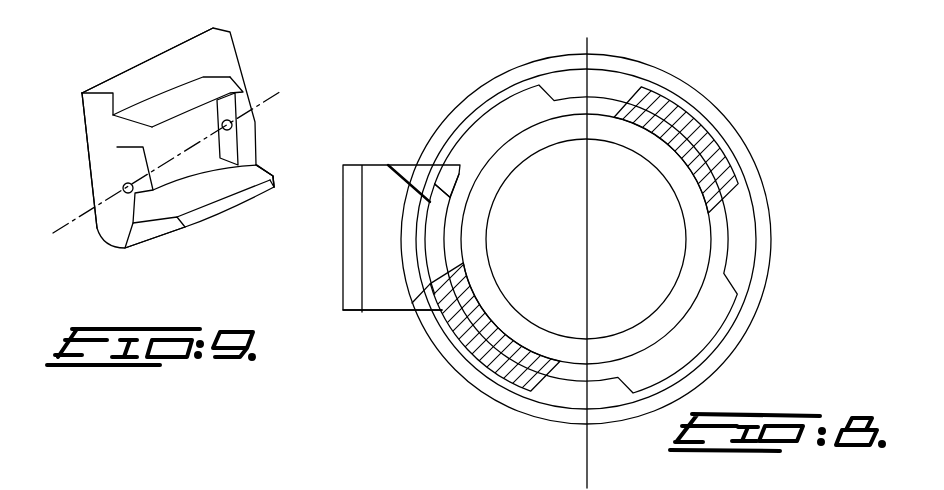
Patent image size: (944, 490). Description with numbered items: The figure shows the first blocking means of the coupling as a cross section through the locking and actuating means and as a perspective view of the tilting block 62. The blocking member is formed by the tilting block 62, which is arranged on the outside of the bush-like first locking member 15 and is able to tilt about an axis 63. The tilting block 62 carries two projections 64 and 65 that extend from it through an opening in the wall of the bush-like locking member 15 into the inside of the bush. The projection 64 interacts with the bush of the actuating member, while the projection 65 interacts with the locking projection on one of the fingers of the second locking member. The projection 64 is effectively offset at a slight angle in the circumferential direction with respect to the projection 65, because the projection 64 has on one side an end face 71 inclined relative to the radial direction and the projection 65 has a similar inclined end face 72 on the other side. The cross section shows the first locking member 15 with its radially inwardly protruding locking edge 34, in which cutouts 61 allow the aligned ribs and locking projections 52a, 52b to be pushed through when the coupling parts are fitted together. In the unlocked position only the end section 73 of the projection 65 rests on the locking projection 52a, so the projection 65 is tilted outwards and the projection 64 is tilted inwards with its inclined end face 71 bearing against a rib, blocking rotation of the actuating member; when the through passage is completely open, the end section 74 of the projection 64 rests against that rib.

In FIG. 8, the first locking member 15 is at (770, 243).
In FIG. 8, the locking edge 34 is at (734, 208).
In FIG. 8, the locking projection 52a is at (482, 348).
In FIG. 8, the locking projection 52b is at (683, 117).
In FIG. 8, the cutouts 61 is at (530, 98).
In FIG. 9, the tilting block 62 is at (118, 73).
In FIG. 8, the tilting block 62 is at (341, 285).
In FIG. 9, the axis 63 is at (82, 217).
In FIG. 9, the projection 64 is at (198, 73).
In FIG. 9, the projection 65 is at (218, 210).
In FIG. 9, the inclined end face 71 is at (232, 77).
In FIG. 8, the inclined end face 71 is at (412, 187).
In FIG. 9, the inclined end face 72 is at (146, 235).
In FIG. 8, the inclined end face 72 is at (442, 333).
In FIG. 9, the end section 73 is at (265, 180).
In FIG. 8, the end section 73 is at (452, 176).
In FIG. 9, the end section 74 is at (88, 137).
In FIG. 8, the end section 74 is at (414, 312).